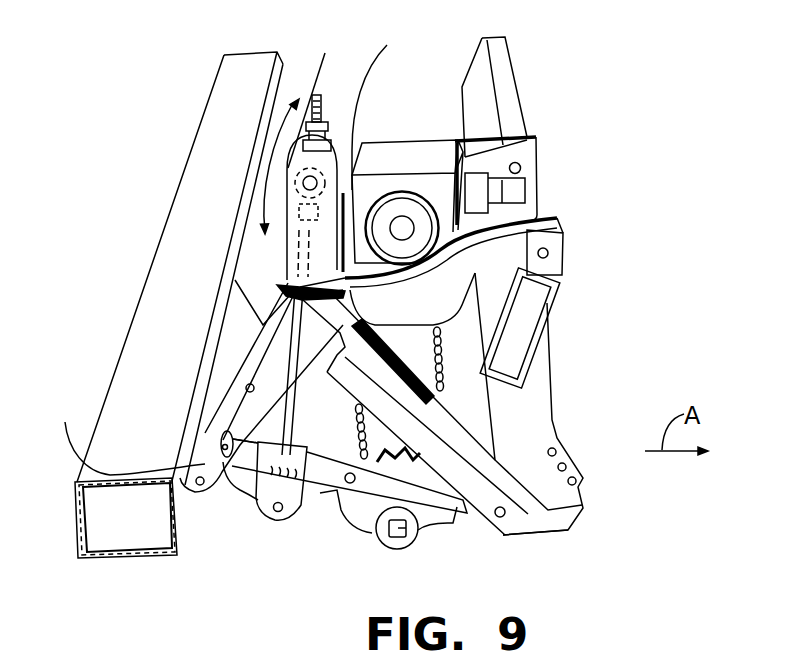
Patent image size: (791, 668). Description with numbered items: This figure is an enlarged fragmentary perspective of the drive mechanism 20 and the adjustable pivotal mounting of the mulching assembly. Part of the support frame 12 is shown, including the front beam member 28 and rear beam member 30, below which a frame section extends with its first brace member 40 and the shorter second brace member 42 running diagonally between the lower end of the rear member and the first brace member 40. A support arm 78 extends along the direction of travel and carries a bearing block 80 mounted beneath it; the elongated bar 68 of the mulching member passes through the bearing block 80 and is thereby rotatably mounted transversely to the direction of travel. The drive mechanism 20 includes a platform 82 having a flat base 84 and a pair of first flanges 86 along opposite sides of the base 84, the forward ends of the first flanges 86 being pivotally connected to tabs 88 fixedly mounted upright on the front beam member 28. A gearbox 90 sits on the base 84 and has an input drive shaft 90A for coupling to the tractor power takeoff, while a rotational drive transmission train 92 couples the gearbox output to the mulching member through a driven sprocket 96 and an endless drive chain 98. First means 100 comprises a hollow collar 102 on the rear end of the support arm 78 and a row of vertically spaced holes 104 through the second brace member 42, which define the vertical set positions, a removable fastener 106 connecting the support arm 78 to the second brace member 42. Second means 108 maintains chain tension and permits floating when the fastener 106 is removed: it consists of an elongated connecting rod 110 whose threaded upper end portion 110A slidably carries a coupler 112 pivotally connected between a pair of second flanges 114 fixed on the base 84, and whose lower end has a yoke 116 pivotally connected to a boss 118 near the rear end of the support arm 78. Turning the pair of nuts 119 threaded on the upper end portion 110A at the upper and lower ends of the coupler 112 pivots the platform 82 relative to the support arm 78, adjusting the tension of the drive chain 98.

The support frame 12 is at (150, 264).
The drive mechanism 20 is at (560, 157).
The front beam member 28 is at (550, 307).
The rear beam member 30 is at (172, 205).
The first brace member 40 is at (462, 413).
The second brace member 42 is at (286, 299).
The elongated bar 68 is at (410, 532).
The support arm 78 is at (488, 520).
The bearing block 80 is at (363, 510).
The platform 82 is at (280, 287).
The flat base 84 is at (344, 195).
The first flange 86 is at (540, 150).
The tab 88 is at (527, 133).
The gearbox 90 is at (403, 155).
The input drive shaft 90A is at (523, 183).
The rotational drive transmission train 92 is at (457, 327).
The driven sprocket 96 is at (413, 456).
The endless drive chain 98 is at (460, 358).
The first means 100 is at (228, 491).
The hollow collar 102 is at (220, 449).
The holes 104 is at (246, 386).
The removable fastener 106 is at (225, 435).
The second means 108 is at (340, 421).
The connecting rod 110 is at (285, 357).
The upper end portion 110A is at (357, 23).
The coupler 112 is at (286, 195).
The second flange 114 is at (323, 104).
The yoke 116 is at (297, 518).
The boss 118 is at (246, 486).
The nuts 119 is at (212, 233).